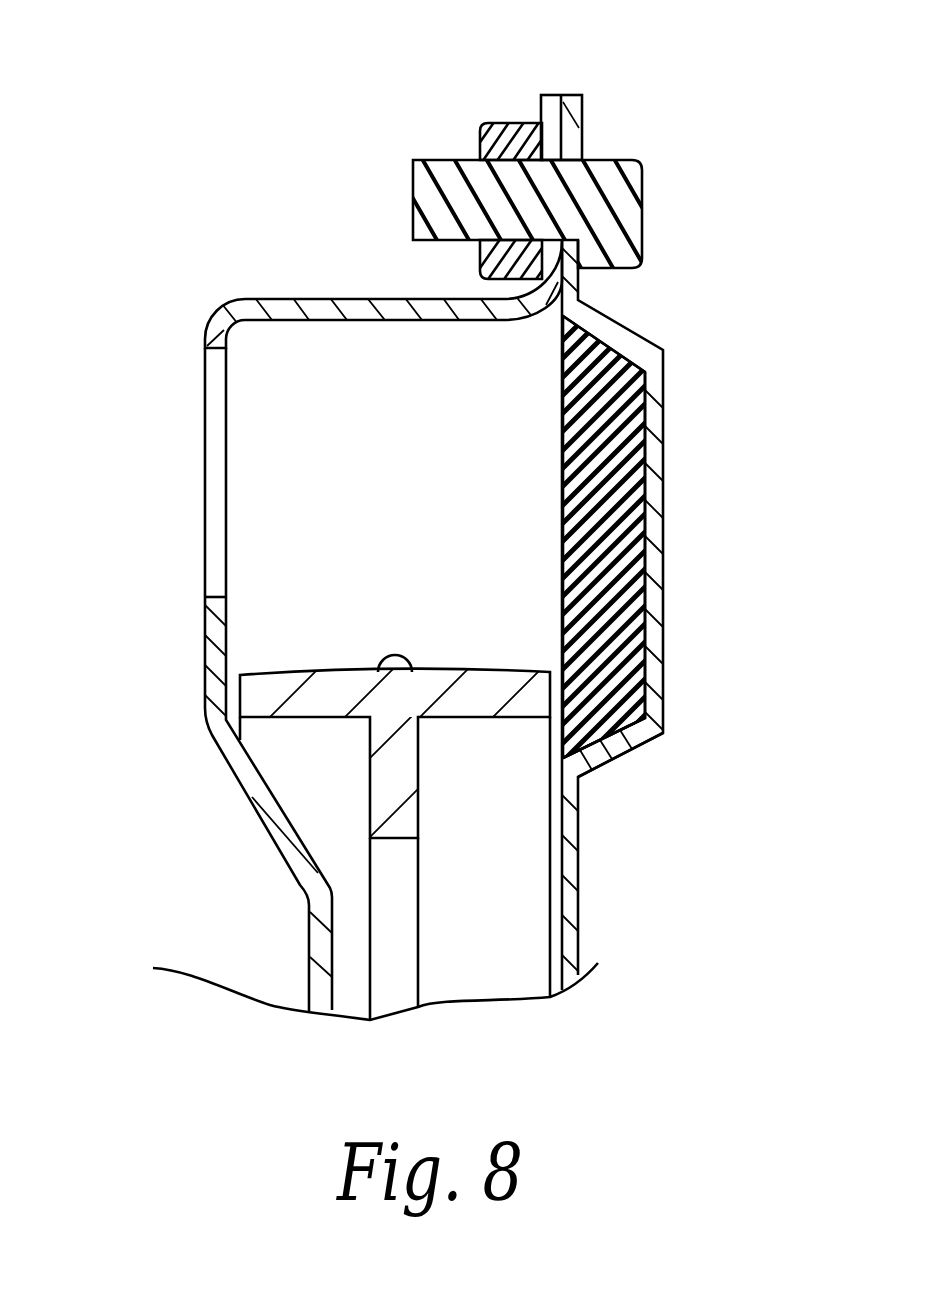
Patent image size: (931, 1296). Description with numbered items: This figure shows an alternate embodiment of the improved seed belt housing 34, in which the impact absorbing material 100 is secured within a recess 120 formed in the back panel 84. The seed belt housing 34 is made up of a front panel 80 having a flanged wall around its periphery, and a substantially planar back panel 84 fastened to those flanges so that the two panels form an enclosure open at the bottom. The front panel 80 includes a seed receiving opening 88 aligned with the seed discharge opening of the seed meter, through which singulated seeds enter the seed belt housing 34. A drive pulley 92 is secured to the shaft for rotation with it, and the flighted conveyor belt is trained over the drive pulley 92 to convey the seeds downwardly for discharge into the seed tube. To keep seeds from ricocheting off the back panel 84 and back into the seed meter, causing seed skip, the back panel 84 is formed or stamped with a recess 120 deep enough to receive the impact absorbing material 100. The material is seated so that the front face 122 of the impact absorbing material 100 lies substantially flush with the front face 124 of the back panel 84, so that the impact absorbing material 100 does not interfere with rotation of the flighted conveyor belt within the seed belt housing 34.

The seed belt housing 34 is at (222, 128).
The front panel 80 is at (275, 285).
The back panel 84 is at (592, 906).
The seed receiving opening 88 is at (210, 415).
The drive pulley 92 is at (307, 670).
The impact absorbing material 100 is at (625, 438).
The recess 120 is at (630, 752).
The front face of the impact absorbing material 122 is at (563, 505).
The front face of the back panel 124 is at (557, 842).